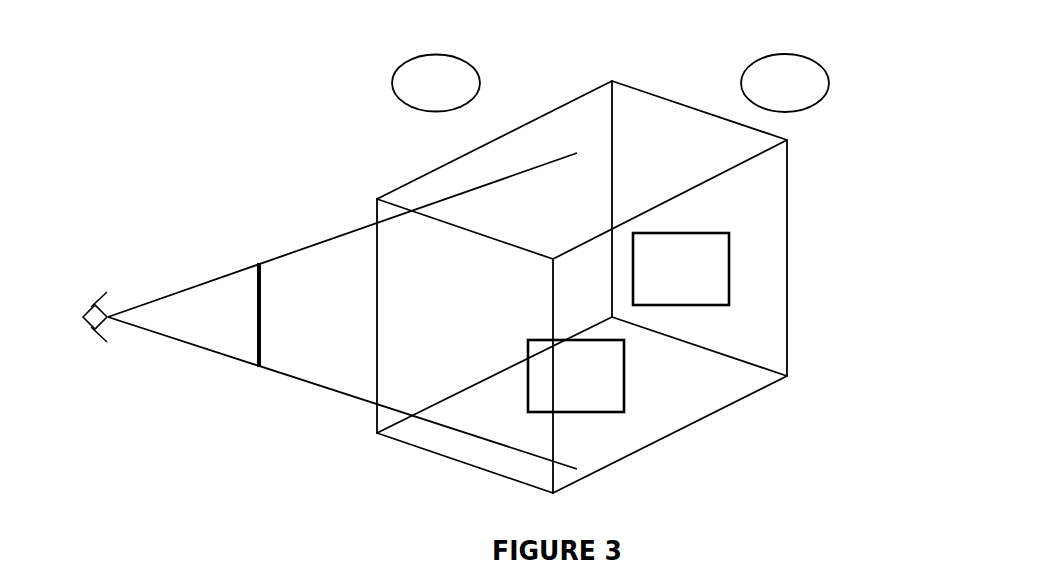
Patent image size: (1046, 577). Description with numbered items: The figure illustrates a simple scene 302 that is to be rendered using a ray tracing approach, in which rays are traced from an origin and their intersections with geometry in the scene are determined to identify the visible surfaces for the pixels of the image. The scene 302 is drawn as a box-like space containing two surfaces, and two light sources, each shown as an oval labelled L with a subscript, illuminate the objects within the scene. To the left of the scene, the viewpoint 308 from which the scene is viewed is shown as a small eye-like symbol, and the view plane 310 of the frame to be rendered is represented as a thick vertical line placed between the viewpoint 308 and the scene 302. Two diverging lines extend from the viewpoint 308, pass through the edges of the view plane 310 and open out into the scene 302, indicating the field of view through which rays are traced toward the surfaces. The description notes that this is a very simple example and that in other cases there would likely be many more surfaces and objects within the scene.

The scene 302 is at (787, 185).
The viewpoint 308 is at (88, 303).
The view plane 310 is at (258, 283).